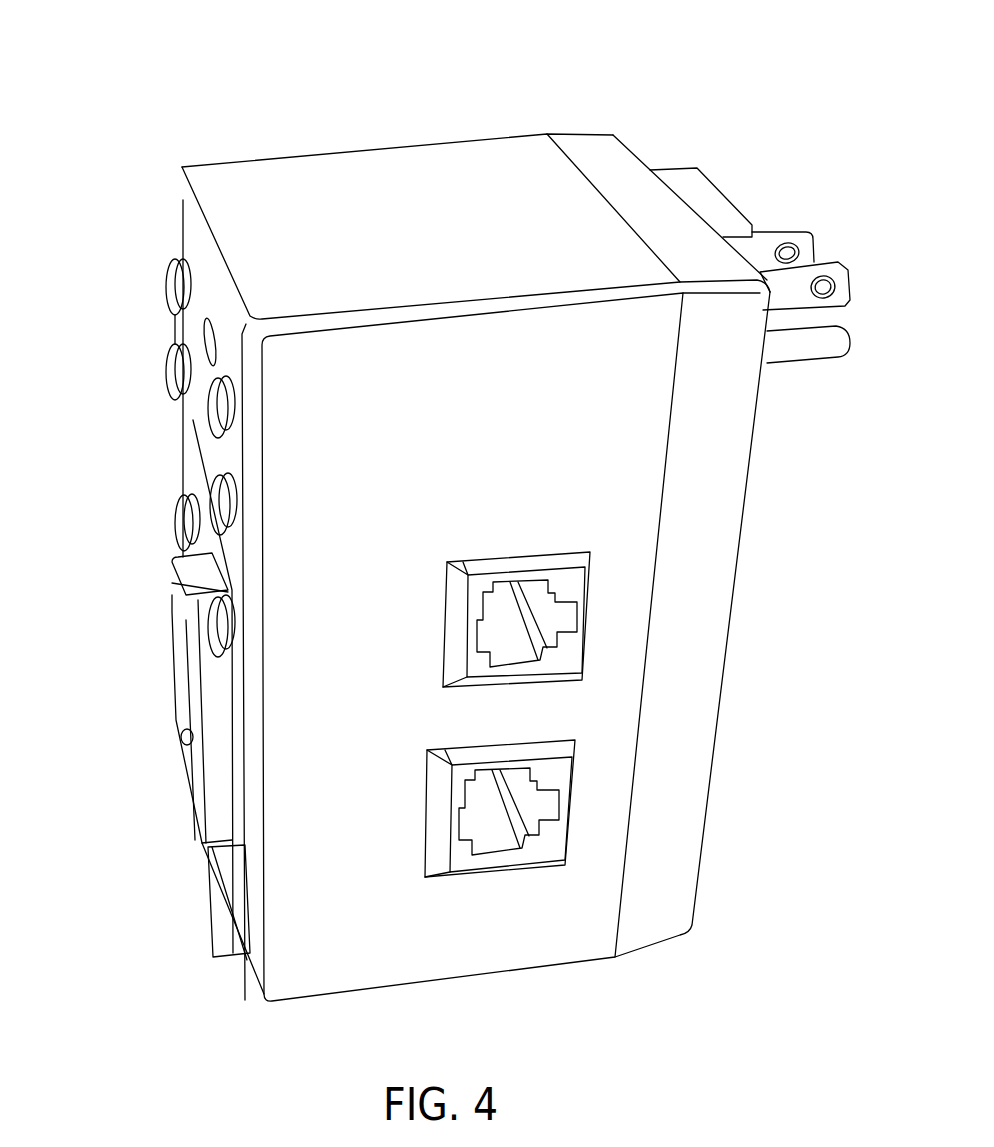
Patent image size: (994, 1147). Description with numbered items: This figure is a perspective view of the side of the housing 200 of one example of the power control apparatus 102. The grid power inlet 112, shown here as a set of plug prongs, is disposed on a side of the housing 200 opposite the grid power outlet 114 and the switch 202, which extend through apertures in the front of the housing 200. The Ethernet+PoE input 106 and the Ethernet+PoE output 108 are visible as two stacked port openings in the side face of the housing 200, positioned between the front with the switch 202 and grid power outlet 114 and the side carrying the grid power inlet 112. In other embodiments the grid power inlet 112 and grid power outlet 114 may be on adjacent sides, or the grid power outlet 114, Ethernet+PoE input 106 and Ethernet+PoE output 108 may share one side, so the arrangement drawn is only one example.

The power control apparatus 102 is at (392, 100).
The housing 200 is at (140, 182).
The grid power inlet 112 is at (778, 232).
The Ethernet+PoE input 106 is at (577, 583).
The Ethernet+PoE output 108 is at (560, 777).
The switch 202 is at (165, 572).
The grid power outlet 114 is at (170, 637).